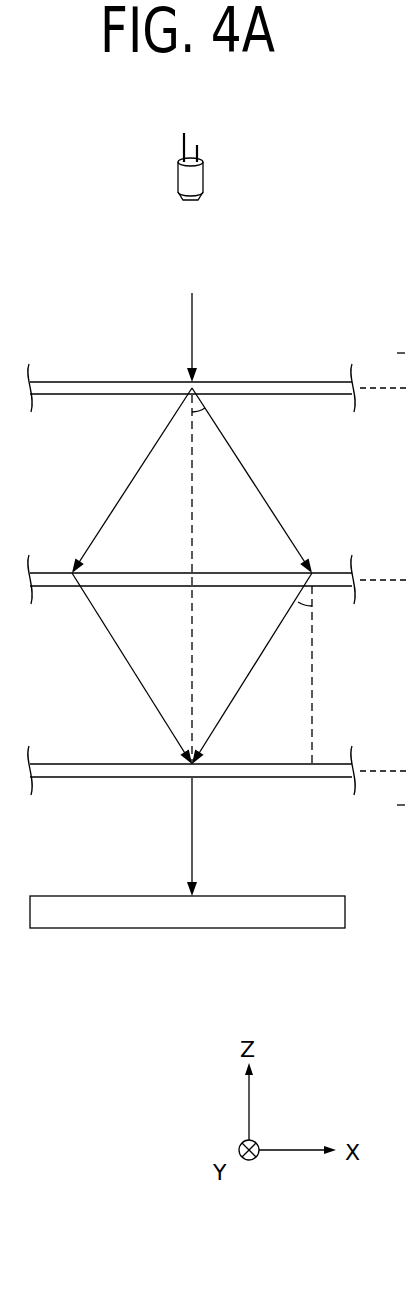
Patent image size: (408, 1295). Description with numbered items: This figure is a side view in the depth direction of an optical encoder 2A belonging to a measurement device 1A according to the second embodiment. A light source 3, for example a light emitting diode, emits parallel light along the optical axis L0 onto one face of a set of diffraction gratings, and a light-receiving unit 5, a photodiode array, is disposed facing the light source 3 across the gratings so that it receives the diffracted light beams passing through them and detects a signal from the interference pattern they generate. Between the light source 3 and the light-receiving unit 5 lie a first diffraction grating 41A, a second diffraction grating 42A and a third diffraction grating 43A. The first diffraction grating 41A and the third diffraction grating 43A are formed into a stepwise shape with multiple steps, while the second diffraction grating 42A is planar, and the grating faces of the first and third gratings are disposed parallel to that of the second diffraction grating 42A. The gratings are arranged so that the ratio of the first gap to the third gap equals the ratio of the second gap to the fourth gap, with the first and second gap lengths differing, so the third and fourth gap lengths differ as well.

The measurement device 1A is at (121, 180).
The optical encoder 2A is at (91, 240).
The light source 3 is at (203, 178).
The optical axis L0 is at (192, 580).
The first diffraction grating 41A is at (90, 381).
The second diffraction grating 42A is at (60, 572).
The third diffraction grating 43A is at (90, 763).
The light-receiving unit 5 is at (257, 928).